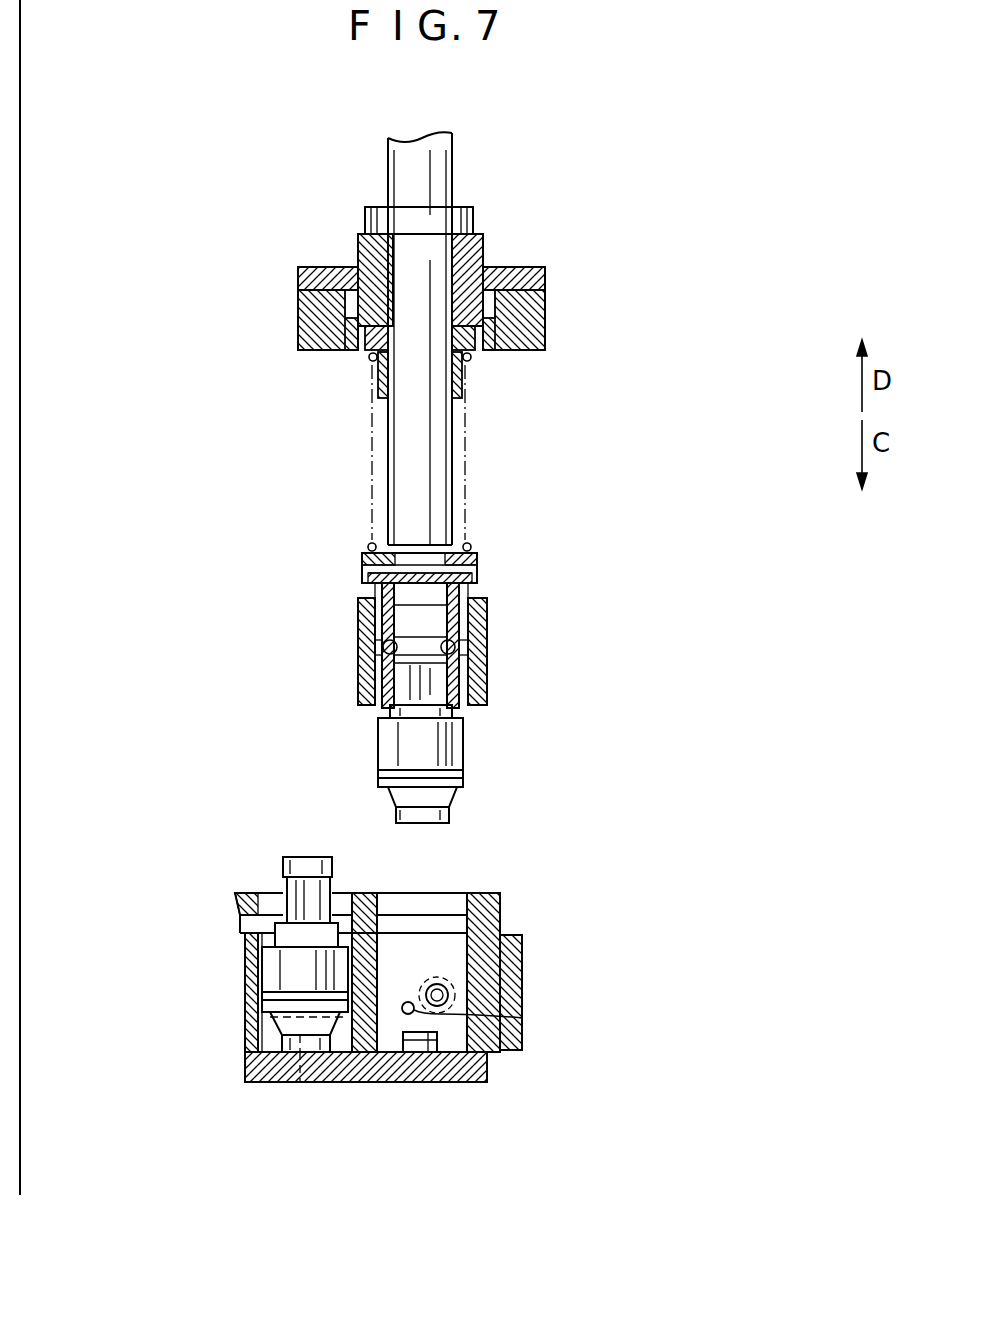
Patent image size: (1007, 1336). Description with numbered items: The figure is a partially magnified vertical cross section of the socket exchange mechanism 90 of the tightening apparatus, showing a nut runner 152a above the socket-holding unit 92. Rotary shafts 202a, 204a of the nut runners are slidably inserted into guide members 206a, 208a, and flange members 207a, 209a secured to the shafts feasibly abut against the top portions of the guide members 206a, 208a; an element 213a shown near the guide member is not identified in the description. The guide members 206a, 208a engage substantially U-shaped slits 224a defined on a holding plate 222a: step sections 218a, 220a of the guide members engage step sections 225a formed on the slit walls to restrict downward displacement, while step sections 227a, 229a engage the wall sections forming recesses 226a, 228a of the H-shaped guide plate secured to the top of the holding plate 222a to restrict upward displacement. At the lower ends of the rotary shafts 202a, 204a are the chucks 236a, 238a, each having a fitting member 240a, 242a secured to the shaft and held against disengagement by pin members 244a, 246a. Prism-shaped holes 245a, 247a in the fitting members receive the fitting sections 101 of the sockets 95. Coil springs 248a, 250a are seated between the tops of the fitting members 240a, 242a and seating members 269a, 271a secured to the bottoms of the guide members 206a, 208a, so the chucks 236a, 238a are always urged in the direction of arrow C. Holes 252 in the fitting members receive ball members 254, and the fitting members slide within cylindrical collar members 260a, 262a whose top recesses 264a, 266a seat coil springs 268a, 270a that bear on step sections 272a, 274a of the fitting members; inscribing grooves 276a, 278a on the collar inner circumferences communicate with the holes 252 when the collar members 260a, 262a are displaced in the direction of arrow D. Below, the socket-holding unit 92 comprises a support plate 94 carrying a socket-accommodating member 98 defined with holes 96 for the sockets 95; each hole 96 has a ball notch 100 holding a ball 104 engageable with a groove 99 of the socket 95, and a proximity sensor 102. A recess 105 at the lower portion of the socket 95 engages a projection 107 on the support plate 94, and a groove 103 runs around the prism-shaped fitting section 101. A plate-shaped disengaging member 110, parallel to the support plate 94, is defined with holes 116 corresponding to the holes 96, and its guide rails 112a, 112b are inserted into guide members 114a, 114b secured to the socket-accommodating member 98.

The nut runner 152a is at (486, 118).
The rotary shaft 202a is at (430, 422).
The rotary shaft 204a is at (600, 338).
The flange member 207a is at (475, 213).
The flange member 209a is at (597, 218).
The guide member 206a is at (484, 262).
The guide member 208a is at (593, 280).
The seating member 269a is at (484, 320).
The seating member 271a is at (640, 324).
The recess 226a is at (297, 267).
The recess 228a is at (296, 277).
The step portion 213a is at (357, 262).
The step section 227a is at (350, 300).
The step section 229a is at (202, 284).
The step section 218a is at (350, 302).
The step section 220a is at (202, 320).
The holding plate 222a is at (297, 353).
The step section 225a is at (367, 355).
The slit 224a is at (337, 355).
The pin member 244a is at (420, 572).
The pin member 246a is at (613, 516).
The coil spring 248a is at (362, 550).
The coil spring 250a is at (262, 563).
The coil spring 268a is at (366, 593).
The coil spring 270a is at (253, 644).
The recess 264a is at (360, 624).
The recess 266a is at (267, 644).
The collar member 260a is at (358, 663).
The collar member 262a is at (215, 651).
The prism-shaped hole 245a is at (360, 680).
The prism-shaped hole 247a is at (211, 697).
The step section 272a is at (477, 587).
The step section 274a is at (638, 549).
The fitting member 240a is at (486, 617).
The fitting member 242a is at (649, 589).
The hole 252 is at (488, 625).
The ball member 254 is at (488, 643).
The inscribing groove 276a is at (488, 660).
The inscribing groove 278a is at (645, 680).
The chuck 236a is at (497, 722).
The chuck 238a is at (541, 658).
The socket 95 is at (370, 741).
The socket-holding unit 92 is at (538, 840).
The socket exchange mechanism 90 is at (750, 735).
The disengaging member 110 is at (243, 908).
The guide rail 112a is at (490, 910).
The guide rail 112b is at (514, 957).
The guide member 114a is at (522, 950).
The guide member 114b is at (644, 973).
The hole 116 is at (262, 893).
The socket-accommodating member 98 is at (243, 1045).
The support plate 94 is at (260, 1075).
The hole 96 is at (383, 1042).
The projection 107 is at (415, 1043).
The proximity sensor 102 is at (437, 1043).
The ball notch 100 is at (523, 995).
The ball 104 is at (523, 1018).
The recess 105 is at (300, 1052).
The groove 99 is at (270, 998).
The fitting section 101 is at (287, 890).
The groove 103 is at (311, 878).